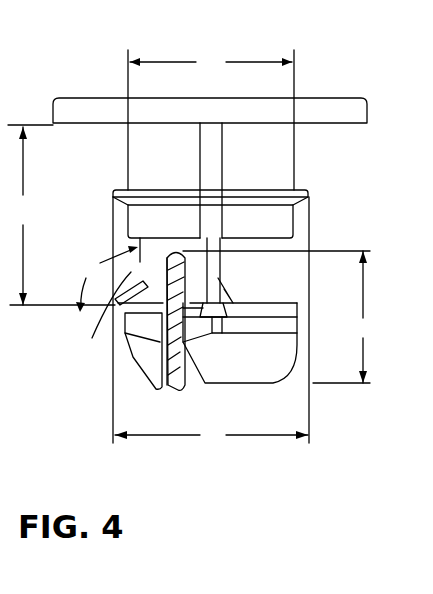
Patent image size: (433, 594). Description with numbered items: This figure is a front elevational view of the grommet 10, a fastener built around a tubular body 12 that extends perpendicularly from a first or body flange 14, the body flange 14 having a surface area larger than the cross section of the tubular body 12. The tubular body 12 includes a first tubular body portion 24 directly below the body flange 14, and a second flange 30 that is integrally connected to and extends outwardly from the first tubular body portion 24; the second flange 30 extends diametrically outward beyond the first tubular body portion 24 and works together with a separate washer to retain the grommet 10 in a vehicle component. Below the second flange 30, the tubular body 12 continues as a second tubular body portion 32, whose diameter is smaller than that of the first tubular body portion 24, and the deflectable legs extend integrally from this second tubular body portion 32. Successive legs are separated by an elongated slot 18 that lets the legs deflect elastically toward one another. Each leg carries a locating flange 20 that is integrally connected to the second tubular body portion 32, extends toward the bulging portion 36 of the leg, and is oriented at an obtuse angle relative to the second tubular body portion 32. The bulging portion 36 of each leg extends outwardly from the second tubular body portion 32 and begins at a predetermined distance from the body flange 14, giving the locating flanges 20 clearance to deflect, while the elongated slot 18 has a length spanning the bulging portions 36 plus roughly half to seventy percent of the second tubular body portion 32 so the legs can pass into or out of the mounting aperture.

The grommet 10 is at (363, 73).
The tubular body 12 is at (128, 155).
The body flange 14 is at (328, 110).
The elongated slot 18 is at (180, 368).
The locating flange 20 is at (263, 295).
The first tubular body portion 24 is at (280, 151).
The second flange 30 is at (306, 192).
The second tubular body portion 32 is at (117, 302).
The bulging portion 36 is at (247, 368).